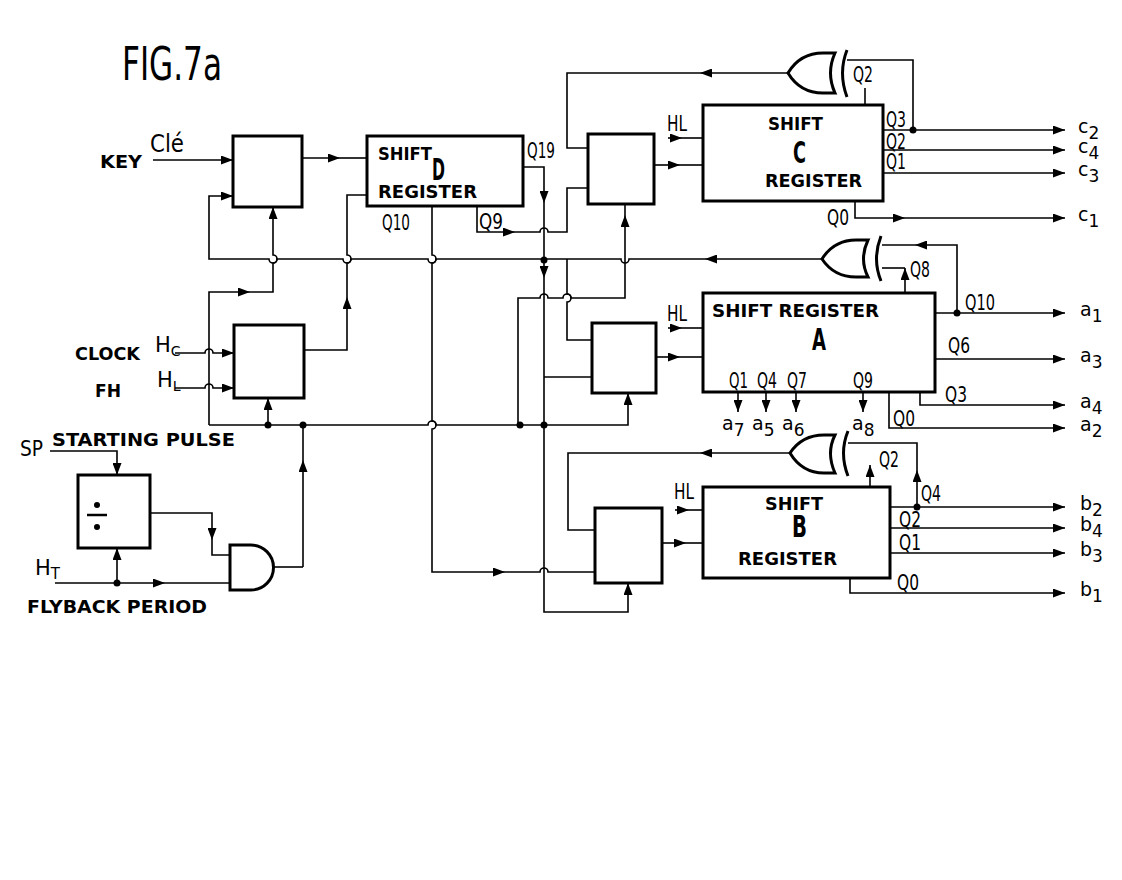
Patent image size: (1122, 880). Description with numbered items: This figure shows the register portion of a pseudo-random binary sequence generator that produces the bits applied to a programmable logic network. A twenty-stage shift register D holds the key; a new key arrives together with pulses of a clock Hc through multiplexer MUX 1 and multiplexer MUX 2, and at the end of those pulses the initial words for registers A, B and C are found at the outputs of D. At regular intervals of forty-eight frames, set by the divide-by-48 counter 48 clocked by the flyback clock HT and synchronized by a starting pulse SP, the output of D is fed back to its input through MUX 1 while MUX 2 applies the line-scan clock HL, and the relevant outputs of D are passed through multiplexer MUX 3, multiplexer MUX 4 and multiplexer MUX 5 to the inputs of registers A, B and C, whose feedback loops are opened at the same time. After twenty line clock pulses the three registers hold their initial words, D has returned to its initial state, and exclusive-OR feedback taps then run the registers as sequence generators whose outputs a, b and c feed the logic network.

The multiplexer MUX1 1 is at (267, 171).
The multiplexer MUX2 2 is at (269, 361).
The multiplexer MUX3 3 is at (624, 358).
The multiplexer MUX4 4 is at (628, 545).
The multiplexer MUX5 5 is at (621, 169).
The divide-by-48 counter 48 is at (114, 511).